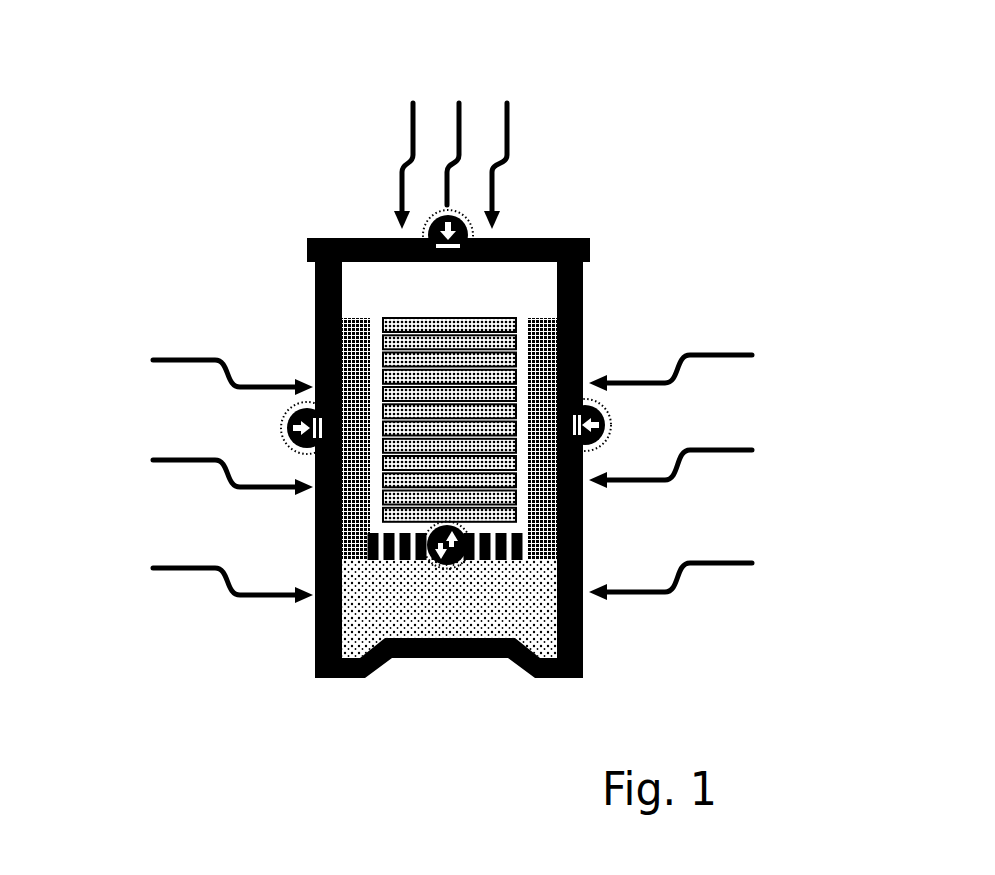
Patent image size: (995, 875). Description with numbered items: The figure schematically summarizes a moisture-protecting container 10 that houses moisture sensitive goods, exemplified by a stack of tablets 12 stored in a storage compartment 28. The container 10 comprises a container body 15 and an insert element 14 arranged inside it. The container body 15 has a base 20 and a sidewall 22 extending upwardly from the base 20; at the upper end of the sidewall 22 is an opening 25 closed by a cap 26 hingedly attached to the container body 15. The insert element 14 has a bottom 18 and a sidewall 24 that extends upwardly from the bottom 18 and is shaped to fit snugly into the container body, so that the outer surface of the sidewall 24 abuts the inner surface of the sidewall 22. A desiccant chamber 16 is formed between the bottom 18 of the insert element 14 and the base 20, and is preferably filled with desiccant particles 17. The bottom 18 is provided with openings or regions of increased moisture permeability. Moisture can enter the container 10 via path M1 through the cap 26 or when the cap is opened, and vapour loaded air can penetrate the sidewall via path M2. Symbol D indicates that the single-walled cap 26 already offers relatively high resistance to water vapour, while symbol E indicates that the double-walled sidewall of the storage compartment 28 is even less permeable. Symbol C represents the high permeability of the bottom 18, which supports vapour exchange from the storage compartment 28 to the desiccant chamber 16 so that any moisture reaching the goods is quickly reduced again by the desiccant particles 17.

The container 10 is at (598, 312).
The stack of tablets 12 is at (477, 320).
The insert element 14 is at (315, 342).
The container body 15 is at (313, 622).
The desiccant chamber 16 is at (422, 612).
The desiccant particles 17 is at (537, 615).
The bottom of the insert element 18 is at (317, 660).
The base of the container body 20 is at (357, 678).
The sidewall of the container body 22 is at (583, 352).
The sidewall of the insert element 24 is at (315, 362).
The opening 25 is at (383, 270).
The cap 26 is at (513, 238).
The storage compartment 28 is at (468, 309).
The symbol C is at (457, 566).
The symbol D is at (455, 208).
The symbol E is at (613, 420).
The path M1 is at (450, 139).
The path M2 is at (439, 479).